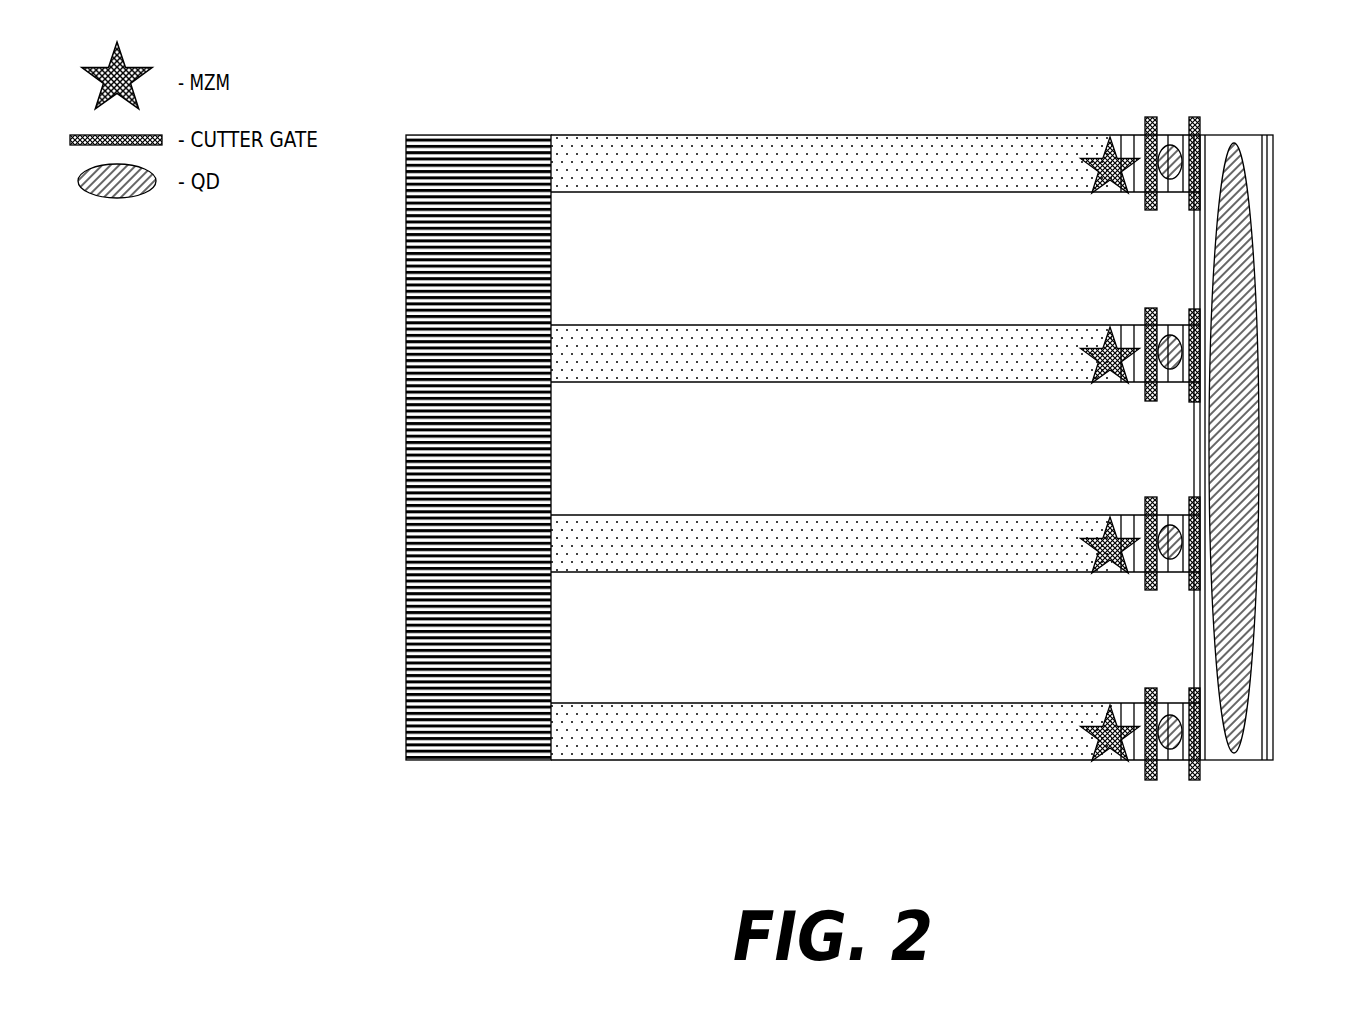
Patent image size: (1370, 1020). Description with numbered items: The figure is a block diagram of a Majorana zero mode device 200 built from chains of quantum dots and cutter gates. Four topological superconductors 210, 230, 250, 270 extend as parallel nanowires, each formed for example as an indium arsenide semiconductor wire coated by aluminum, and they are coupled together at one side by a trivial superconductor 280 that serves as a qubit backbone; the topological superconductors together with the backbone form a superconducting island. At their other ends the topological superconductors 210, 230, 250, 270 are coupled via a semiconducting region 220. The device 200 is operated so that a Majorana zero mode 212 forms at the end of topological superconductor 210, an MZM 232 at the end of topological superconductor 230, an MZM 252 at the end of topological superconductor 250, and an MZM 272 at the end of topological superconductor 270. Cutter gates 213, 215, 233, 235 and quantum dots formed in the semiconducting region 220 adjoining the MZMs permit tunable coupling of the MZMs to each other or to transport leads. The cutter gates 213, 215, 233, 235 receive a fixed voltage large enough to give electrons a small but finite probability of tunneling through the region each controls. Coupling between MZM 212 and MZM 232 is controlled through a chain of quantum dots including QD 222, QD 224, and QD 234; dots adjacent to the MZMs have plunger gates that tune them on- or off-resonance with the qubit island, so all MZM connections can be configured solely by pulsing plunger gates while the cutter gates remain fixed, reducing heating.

The Majorana zero mode device 200 is at (863, 891).
The topological superconductor 210 is at (683, 192).
The Majorana zero mode 212 is at (1110, 140).
The cutter gate 213 is at (1151, 117).
The cutter gate 215 is at (1194, 117).
The semiconducting region 220 is at (1273, 268).
The quantum dot 222 is at (1170, 145).
The quantum dot 224 is at (1259, 447).
The topological superconductor 230 is at (683, 382).
The Majorana zero mode 232 is at (1110, 330).
The cutter gate 233 is at (1151, 308).
The quantum dot 234 is at (1170, 335).
The cutter gate 235 is at (1190, 402).
The topological superconductor 250 is at (683, 572).
The Majorana zero mode 252 is at (1110, 517).
The topological superconductor 270 is at (683, 760).
The Majorana zero mode 272 is at (1110, 705).
The trivial superconductor 280 is at (406, 432).